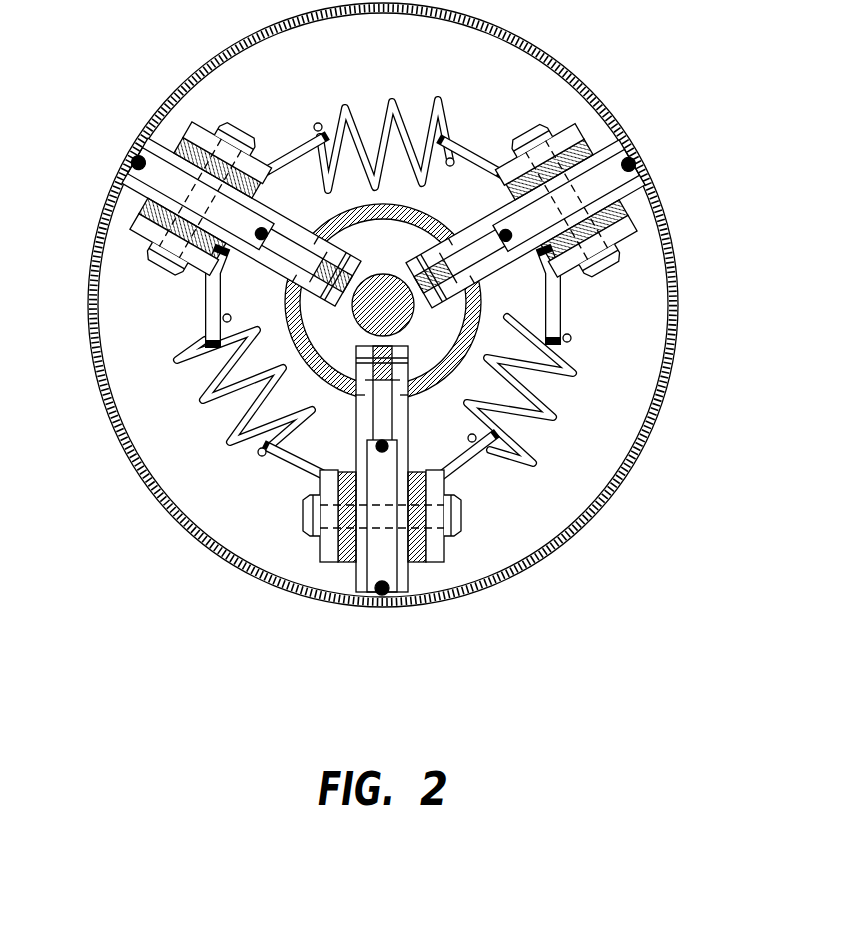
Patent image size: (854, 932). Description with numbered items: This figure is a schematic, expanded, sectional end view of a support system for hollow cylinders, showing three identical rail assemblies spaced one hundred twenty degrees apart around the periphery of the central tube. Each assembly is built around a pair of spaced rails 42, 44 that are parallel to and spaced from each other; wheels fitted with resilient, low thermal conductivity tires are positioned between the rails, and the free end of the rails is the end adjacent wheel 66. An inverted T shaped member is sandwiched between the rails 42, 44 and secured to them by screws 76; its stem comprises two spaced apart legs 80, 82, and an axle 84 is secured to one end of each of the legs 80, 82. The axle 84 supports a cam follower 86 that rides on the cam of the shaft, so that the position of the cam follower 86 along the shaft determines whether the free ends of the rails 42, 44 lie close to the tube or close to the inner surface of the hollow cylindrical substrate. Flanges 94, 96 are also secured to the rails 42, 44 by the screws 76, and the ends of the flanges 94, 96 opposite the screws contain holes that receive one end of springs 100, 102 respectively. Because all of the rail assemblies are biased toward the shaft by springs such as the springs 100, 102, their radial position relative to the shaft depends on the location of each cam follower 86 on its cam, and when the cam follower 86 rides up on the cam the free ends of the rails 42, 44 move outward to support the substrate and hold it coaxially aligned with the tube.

The rail 42 is at (346, 563).
The rail 44 is at (418, 563).
The wheel 66 is at (392, 594).
The screw 76 is at (325, 450).
The leg 80 is at (325, 450).
The leg 82 is at (462, 517).
The axle 84 is at (480, 312).
The cam follower 86 is at (290, 304).
The flange 94 is at (322, 556).
The flange 96 is at (445, 560).
The spring 100 is at (203, 395).
The spring 102 is at (540, 395).